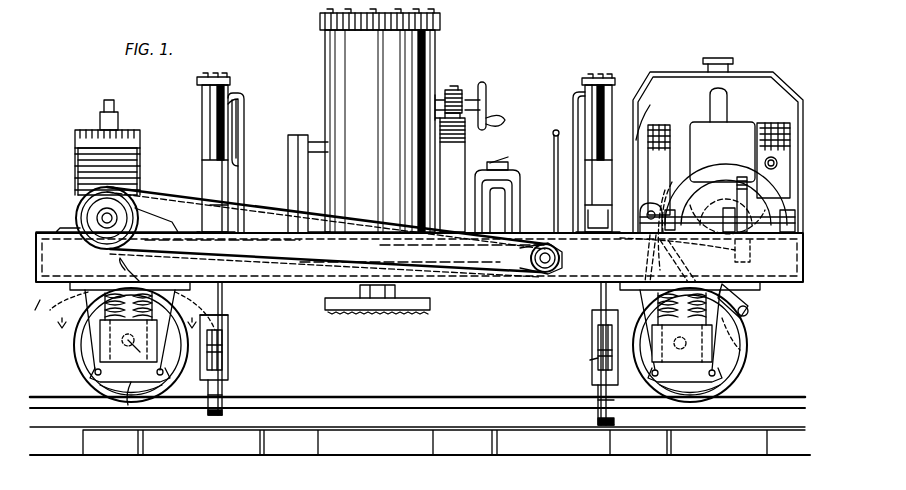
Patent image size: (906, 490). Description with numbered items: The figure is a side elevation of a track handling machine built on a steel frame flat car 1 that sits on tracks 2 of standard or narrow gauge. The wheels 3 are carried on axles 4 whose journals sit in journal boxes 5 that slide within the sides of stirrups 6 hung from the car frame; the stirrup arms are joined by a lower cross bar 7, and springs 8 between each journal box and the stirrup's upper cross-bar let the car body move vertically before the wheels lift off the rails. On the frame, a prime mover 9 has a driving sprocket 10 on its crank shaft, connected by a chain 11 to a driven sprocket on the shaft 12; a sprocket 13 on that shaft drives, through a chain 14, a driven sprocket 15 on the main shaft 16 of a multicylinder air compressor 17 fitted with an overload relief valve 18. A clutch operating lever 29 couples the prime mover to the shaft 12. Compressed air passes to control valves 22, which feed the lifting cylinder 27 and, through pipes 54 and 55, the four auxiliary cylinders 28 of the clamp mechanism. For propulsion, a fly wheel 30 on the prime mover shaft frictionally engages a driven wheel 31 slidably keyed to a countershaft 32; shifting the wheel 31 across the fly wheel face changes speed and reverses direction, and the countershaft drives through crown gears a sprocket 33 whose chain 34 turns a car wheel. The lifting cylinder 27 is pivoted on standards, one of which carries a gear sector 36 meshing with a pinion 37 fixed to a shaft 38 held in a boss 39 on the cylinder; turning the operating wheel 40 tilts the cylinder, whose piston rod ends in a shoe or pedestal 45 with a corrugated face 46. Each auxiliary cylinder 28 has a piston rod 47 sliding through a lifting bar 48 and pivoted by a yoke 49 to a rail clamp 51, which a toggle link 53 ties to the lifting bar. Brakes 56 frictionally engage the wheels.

The steel frame flat car 1 is at (62, 284).
The tracks 2 is at (510, 130).
The wheels 3 is at (77, 357).
The axles 4 is at (160, 372).
The journal boxes 5 is at (760, 375).
The stirrups 6 is at (200, 300).
The lower cross bar 7 is at (128, 405).
The springs 8 is at (266, 397).
The prime mover 9 is at (760, 80).
The driving sprocket 10 is at (712, 180).
The chain 11 is at (660, 185).
The shaft 12 is at (545, 272).
The sprocket 13 is at (530, 262).
The chain 14 is at (255, 210).
The driven sprocket 15 is at (92, 210).
The main shaft 16 is at (97, 218).
The air compressor 17 is at (140, 150).
The overload relief valve 18 is at (108, 100).
The control valves 22 is at (500, 157).
The lifting cylinder 27 is at (440, 25).
The auxiliary cylinders 28 is at (202, 97).
The clutch operating lever 29 is at (554, 160).
The fly wheel 30 is at (718, 176).
The driven wheel 31 is at (760, 200).
The countershaft 32 is at (700, 253).
The sprocket 33 is at (657, 258).
The chain 34 is at (695, 265).
The gear sector 36 is at (465, 128).
The pinion 37 is at (453, 86).
The shaft 38 is at (445, 100).
The boss 39 is at (395, 122).
The operating wheel 40 is at (486, 90).
The shoe or pedestal 45 is at (325, 302).
The corrugated face 46 is at (365, 314).
The piston rod 47 is at (222, 335).
The lifting bar 48 is at (222, 310).
The yoke 49 is at (571, 370).
The rail clamp 51 is at (222, 380).
The toggle link 53 is at (228, 350).
The pipe 54 is at (244, 105).
The pipe 55 is at (238, 166).
The brakes 56 is at (752, 316).